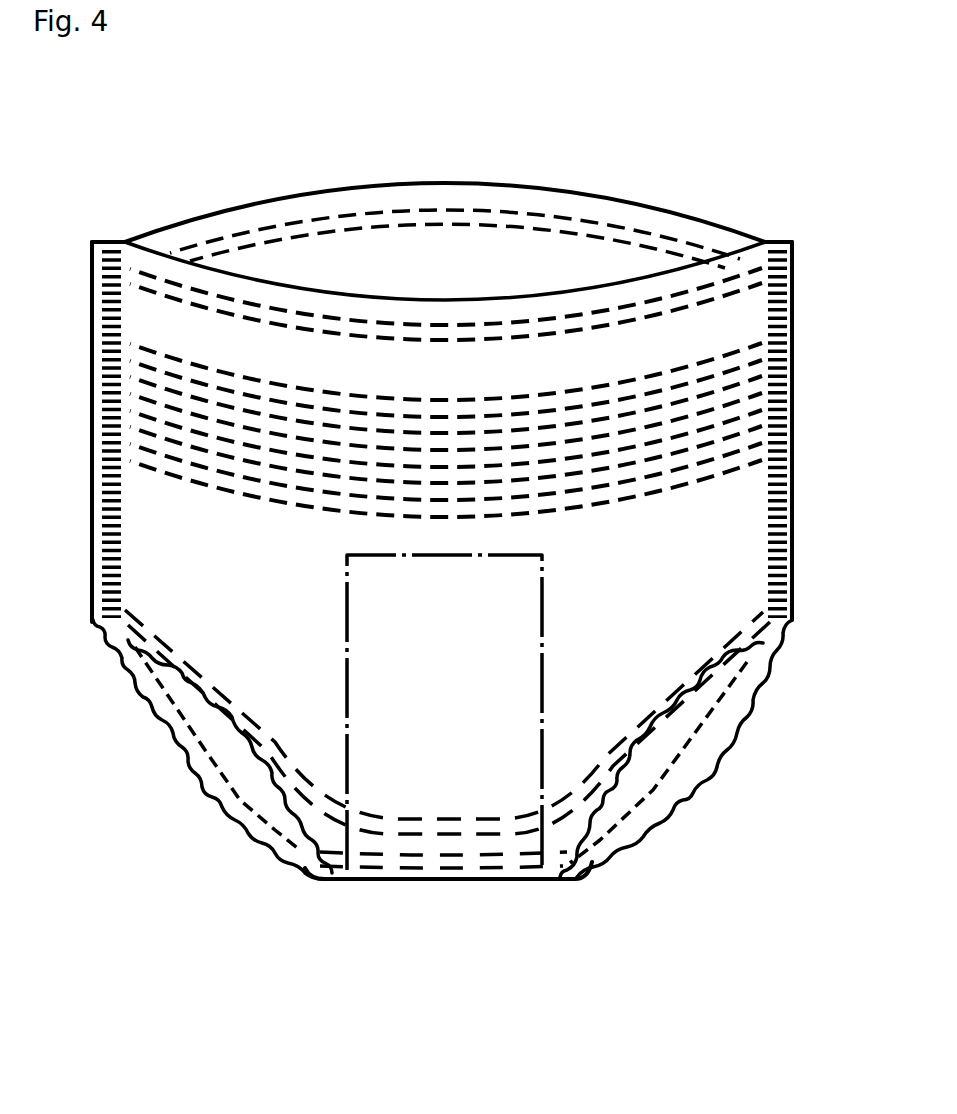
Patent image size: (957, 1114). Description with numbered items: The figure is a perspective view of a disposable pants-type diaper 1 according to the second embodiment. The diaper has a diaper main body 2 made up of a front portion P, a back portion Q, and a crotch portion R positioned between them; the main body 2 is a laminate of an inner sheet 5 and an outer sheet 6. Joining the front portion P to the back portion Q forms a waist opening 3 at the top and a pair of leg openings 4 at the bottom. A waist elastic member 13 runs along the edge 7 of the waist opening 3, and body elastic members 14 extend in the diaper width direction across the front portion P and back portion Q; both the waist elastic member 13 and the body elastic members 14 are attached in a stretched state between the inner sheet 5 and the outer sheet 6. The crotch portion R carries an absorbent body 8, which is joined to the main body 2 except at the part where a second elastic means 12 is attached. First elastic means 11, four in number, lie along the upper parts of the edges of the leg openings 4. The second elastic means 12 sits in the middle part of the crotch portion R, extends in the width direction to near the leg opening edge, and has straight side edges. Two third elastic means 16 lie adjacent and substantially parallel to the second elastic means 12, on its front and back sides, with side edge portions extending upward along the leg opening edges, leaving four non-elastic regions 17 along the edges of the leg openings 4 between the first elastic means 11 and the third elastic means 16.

The disposable pants-type diaper 1 is at (777, 207).
The diaper main body 2 is at (658, 203).
The waist opening 3 is at (469, 258).
The leg openings 4 is at (228, 753).
The inner sheet 5 is at (318, 258).
The outer sheet 6 is at (177, 570).
The edge of the waist opening 7 is at (527, 187).
The absorbent body 8 is at (458, 770).
The first elastic means 11 is at (138, 697).
The second elastic means 12 is at (378, 883).
The waist elastic member 13 is at (190, 235).
The body elastic members 14 is at (705, 360).
The third elastic means 16 is at (493, 883).
The non-elastic regions 17 is at (292, 770).
The front portion P is at (703, 560).
The back portion Q is at (367, 187).
The crotch portion R is at (553, 878).